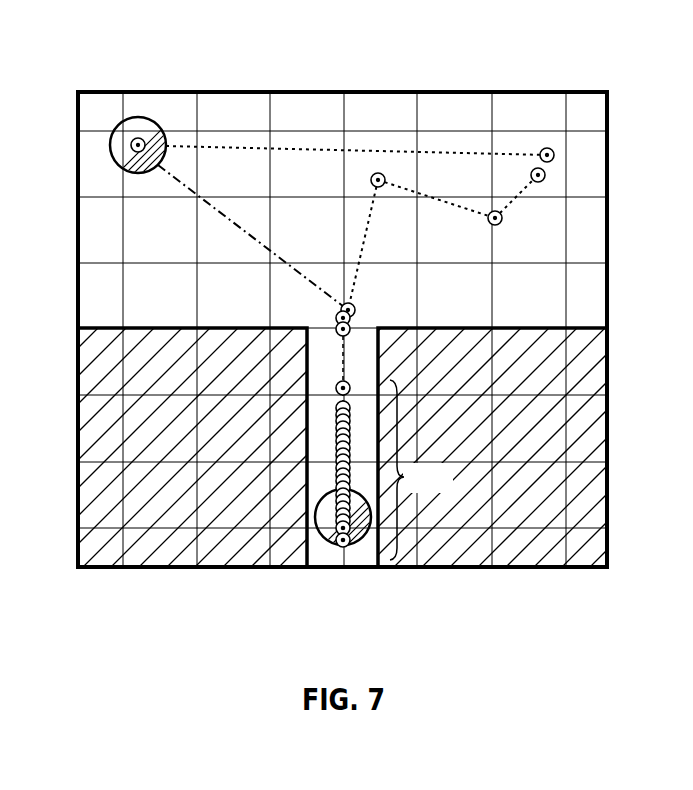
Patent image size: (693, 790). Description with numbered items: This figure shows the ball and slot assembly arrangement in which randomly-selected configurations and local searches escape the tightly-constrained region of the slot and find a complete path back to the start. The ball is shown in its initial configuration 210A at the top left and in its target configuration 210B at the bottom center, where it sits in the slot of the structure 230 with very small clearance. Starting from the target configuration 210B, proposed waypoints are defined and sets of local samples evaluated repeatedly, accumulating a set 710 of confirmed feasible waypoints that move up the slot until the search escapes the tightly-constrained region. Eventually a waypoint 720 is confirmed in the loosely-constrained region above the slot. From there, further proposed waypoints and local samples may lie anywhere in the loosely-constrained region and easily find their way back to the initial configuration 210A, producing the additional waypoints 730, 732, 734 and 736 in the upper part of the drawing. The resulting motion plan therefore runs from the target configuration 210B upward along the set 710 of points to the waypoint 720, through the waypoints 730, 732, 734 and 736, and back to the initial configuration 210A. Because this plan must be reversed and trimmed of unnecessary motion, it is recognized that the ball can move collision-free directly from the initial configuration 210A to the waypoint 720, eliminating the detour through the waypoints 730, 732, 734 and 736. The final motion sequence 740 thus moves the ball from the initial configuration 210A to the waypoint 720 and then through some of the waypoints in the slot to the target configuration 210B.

The initial configuration 210A is at (133, 117).
The target configuration 210B is at (330, 543).
The structure 230 is at (167, 503).
The set of confirmed waypoints 710 is at (421, 470).
The waypoint 720 is at (355, 312).
The waypoint 730 is at (378, 173).
The waypoint 732 is at (495, 226).
The waypoint 734 is at (545, 176).
The waypoint 736 is at (547, 148).
The final motion sequence 740 is at (215, 203).